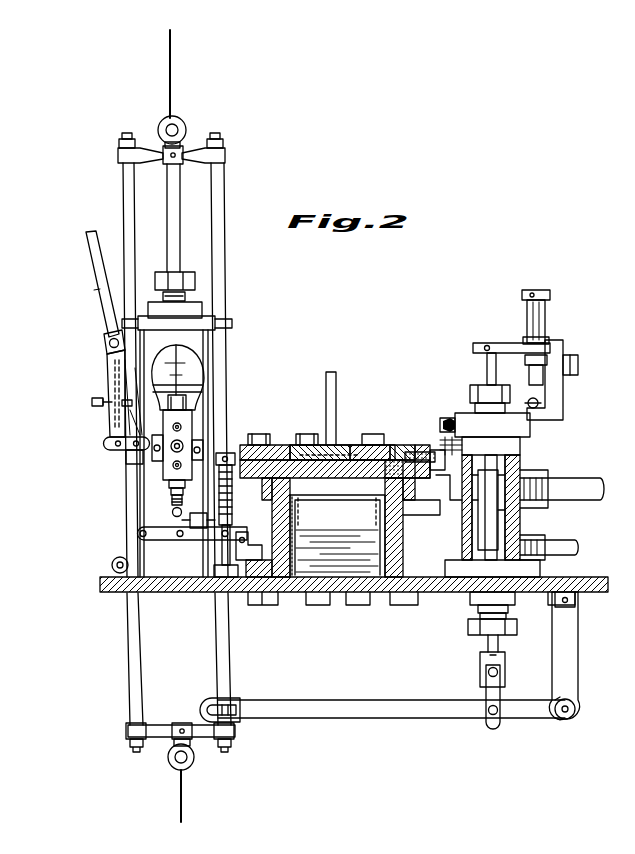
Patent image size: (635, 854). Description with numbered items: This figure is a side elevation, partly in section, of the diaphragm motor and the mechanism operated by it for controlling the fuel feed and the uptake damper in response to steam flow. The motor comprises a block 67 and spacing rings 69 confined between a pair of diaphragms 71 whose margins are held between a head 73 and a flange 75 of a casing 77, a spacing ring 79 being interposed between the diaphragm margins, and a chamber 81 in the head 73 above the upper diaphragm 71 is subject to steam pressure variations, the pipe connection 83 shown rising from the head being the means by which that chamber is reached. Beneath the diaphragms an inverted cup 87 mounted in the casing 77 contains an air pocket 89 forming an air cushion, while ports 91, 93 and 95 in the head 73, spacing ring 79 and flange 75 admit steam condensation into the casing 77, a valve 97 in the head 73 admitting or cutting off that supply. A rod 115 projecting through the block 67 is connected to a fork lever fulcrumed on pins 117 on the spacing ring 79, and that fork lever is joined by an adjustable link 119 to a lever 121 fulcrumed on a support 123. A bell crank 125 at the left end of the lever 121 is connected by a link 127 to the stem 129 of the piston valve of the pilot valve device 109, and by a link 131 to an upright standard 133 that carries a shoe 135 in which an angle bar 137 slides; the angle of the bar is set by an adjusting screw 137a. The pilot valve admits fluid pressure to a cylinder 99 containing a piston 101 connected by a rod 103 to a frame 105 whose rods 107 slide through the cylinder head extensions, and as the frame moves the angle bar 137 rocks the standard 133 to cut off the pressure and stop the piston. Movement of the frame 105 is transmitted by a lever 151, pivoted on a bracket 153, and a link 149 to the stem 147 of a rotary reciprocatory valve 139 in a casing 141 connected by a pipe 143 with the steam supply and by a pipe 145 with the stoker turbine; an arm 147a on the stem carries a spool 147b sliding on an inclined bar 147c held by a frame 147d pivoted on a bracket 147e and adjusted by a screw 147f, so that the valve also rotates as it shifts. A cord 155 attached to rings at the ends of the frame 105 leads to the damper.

The cord 155 is at (172, 52).
The frame 105 is at (226, 183).
The rods 107 is at (130, 210).
The rod 103 is at (174, 236).
The cylinder 99 is at (198, 346).
The piston 101 is at (170, 371).
The flange 75 is at (208, 482).
The stem 129 is at (172, 500).
The link 127 is at (172, 513).
The lever 121 is at (200, 542).
The bell crank 125 is at (165, 543).
The link 131 is at (130, 448).
The angle bar 137 is at (108, 302).
The shoe 135 is at (105, 345).
The adjusting screw 137a is at (105, 400).
The upright standard 133 is at (110, 392).
The pilot valve device 109 is at (125, 430).
The adjustable link 119 is at (242, 510).
The support 123 is at (258, 545).
The tube 83 is at (324, 381).
The head 73 is at (258, 443).
The diaphragms 71 is at (285, 458).
The chamber 81 is at (312, 458).
The block 67 is at (352, 444).
The spacing rings 69 is at (375, 445).
The port 91 is at (394, 460).
The port 93 is at (405, 445).
The valve 97 is at (425, 445).
The spacing ring 79 is at (452, 470).
The casing 77 is at (400, 522).
The port 95 is at (425, 502).
The inverted cup 87 is at (385, 548).
The air pocket 89 is at (337, 539).
The rod 115 is at (348, 505).
The pins 117 is at (310, 536).
The arm 147a is at (503, 348).
The spool 147b is at (540, 341).
The inclined bar 147c is at (535, 318).
The frame 147d is at (563, 345).
The bracket 147e is at (557, 390).
The adjusting screw 147f is at (540, 403).
The rotary reciprocatory valve 139 is at (520, 527).
The casing 141 is at (520, 512).
The pipe 143 is at (565, 480).
The pipe 145 is at (560, 550).
The stem 147 is at (485, 640).
The link 149 is at (485, 692).
The lever 151 is at (320, 698).
The bracket 153 is at (595, 648).